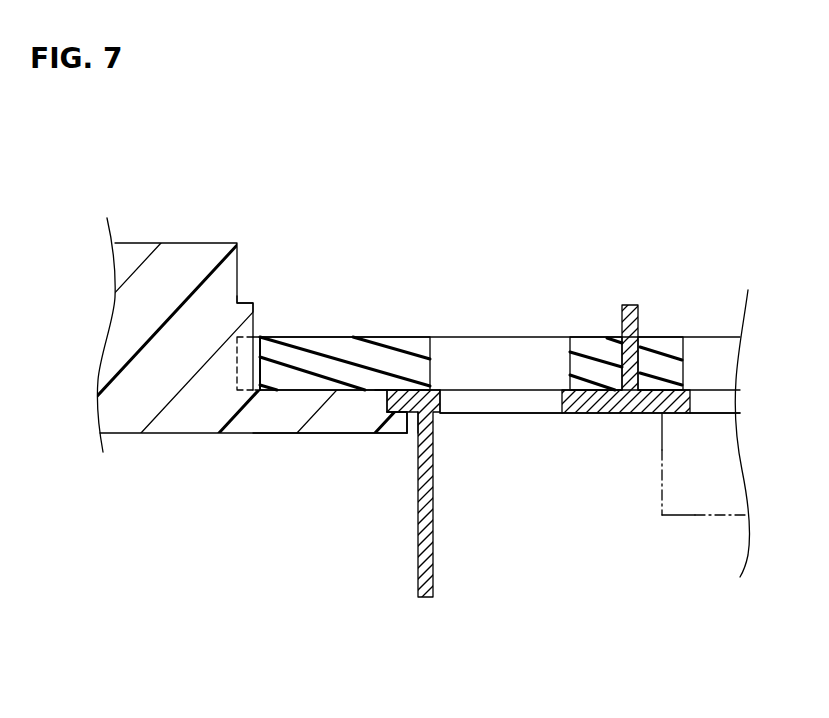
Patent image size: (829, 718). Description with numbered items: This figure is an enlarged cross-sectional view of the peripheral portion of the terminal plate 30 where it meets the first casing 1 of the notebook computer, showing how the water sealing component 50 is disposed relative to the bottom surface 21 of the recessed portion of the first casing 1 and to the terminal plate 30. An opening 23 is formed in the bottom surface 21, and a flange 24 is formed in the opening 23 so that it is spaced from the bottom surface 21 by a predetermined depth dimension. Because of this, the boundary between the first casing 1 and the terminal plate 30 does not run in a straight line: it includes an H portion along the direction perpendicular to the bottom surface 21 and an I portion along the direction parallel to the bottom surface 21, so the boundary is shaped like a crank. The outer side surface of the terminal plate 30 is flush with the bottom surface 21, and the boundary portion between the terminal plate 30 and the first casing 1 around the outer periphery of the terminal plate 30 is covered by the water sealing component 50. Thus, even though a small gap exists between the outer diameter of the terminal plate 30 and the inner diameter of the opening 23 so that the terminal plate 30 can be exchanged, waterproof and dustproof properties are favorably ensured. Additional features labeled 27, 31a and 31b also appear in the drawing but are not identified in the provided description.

The first casing 1 is at (150, 336).
The step portion 27 is at (252, 303).
The bottom surface 21 is at (312, 391).
The water sealing component 50 is at (382, 360).
The first plate portion 31a is at (538, 457).
The second plate portion 31b is at (678, 488).
The terminal plate 30 is at (457, 414).
The flange 24 is at (402, 422).
The H portion H is at (377, 402).
The I portion I is at (397, 415).
The opening 23 is at (517, 522).